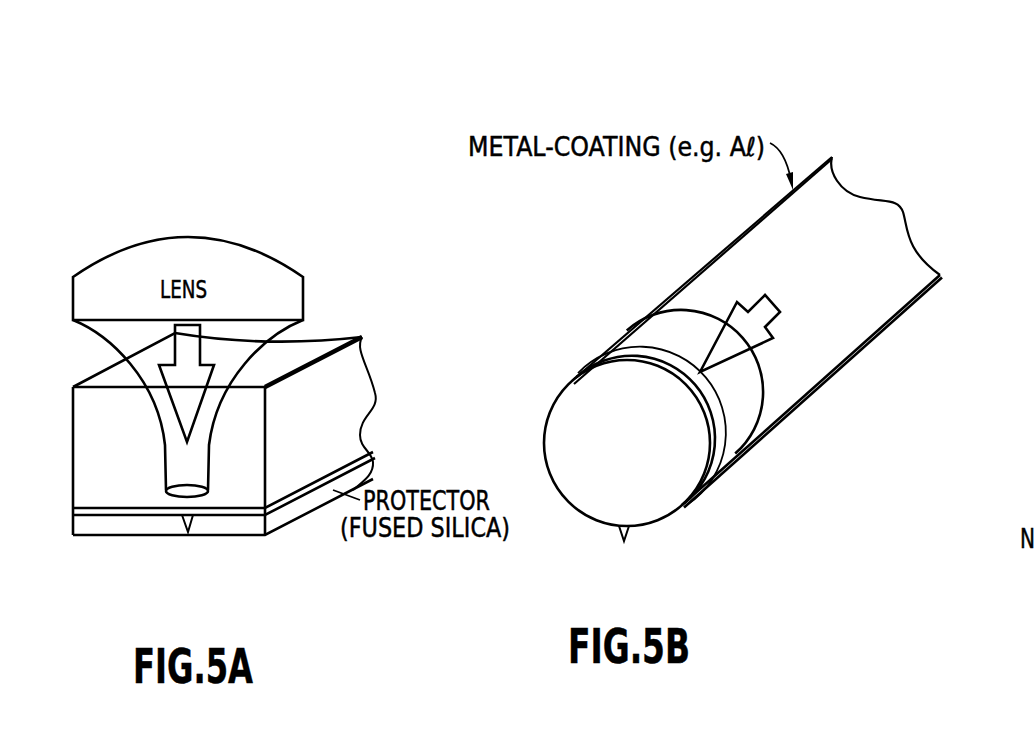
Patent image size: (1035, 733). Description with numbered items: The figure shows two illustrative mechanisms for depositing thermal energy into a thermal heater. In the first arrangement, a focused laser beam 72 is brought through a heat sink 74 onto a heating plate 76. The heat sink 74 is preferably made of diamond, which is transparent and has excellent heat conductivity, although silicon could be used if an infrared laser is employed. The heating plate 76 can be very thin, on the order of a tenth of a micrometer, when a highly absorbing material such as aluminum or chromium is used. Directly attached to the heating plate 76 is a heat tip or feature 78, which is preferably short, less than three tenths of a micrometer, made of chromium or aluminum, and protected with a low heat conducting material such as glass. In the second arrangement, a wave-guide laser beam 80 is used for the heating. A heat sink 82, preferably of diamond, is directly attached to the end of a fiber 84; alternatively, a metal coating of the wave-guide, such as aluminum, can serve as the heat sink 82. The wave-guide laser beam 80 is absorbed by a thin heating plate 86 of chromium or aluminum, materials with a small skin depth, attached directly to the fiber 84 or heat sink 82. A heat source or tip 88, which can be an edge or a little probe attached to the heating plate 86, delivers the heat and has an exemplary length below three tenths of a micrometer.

In FIG. 5A, the focused laser beam 72 is at (182, 205).
In FIG. 5A, the heat sink 74 is at (83, 498).
In FIG. 5A, the heating plate 76 is at (338, 468).
In FIG. 5A, the heat tip or feature 78 is at (184, 525).
In FIG. 5B, the wave-guide laser beam 80 is at (829, 140).
In FIG. 5B, the heat sink 82 is at (668, 317).
In FIG. 5B, the fiber 84 is at (932, 216).
In FIG. 5B, the heating plate 86 is at (688, 502).
In FIG. 5B, the heat source or tip 88 is at (625, 542).